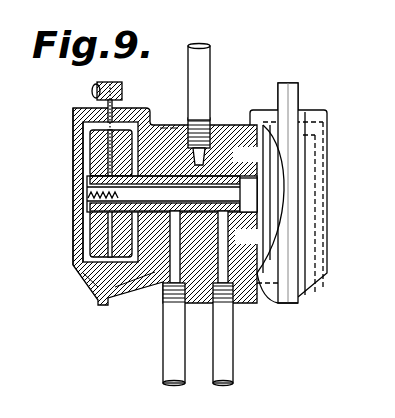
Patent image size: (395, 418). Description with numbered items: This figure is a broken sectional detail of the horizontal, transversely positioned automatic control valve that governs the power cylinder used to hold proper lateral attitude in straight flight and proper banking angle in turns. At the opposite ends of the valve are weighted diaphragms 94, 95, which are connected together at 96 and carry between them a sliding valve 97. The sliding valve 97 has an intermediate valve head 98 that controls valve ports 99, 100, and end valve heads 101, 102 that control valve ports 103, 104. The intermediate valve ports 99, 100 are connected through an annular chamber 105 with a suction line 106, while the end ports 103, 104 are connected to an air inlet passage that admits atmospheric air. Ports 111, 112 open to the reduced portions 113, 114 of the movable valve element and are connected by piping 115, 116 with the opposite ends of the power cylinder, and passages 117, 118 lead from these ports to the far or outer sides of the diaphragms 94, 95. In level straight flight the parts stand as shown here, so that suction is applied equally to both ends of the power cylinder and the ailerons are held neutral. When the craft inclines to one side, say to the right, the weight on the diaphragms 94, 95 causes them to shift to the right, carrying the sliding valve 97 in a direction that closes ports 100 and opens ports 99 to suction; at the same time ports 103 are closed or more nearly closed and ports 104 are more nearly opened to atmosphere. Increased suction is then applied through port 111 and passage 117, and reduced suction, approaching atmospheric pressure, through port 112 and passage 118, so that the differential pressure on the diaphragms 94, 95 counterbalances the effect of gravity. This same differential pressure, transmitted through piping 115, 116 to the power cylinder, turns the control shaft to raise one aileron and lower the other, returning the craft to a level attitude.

The weighted diaphragm 94 is at (75, 262).
The weighted diaphragm 95 is at (310, 262).
The connection 96 is at (105, 203).
The sliding valve 97 is at (243, 126).
The intermediate valve head 98 is at (172, 127).
The valve port 99 is at (160, 127).
The valve port 100 is at (222, 130).
The end valve head 101 is at (92, 163).
The end valve head 102 is at (253, 188).
The valve port 103 is at (130, 302).
The valve port 104 is at (251, 237).
The annular chamber 105 is at (185, 322).
The suction line 106 is at (200, 47).
The port 111 is at (150, 297).
The port 112 is at (250, 275).
The reduced portion 113 is at (163, 124).
The reduced portion 114 is at (249, 154).
The piping 115 is at (166, 357).
The piping 116 is at (234, 367).
The passage 117 is at (88, 284).
The passage 118 is at (285, 305).